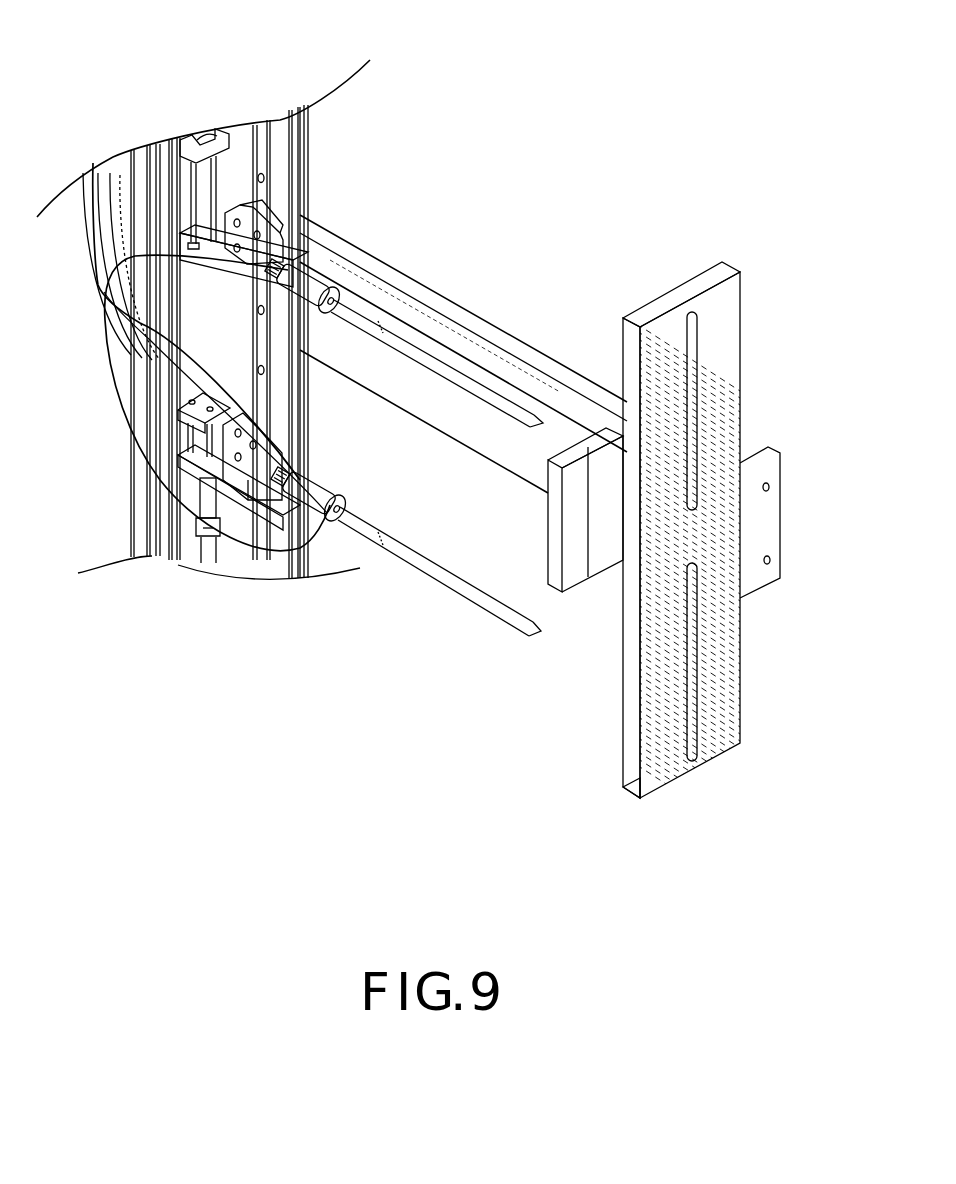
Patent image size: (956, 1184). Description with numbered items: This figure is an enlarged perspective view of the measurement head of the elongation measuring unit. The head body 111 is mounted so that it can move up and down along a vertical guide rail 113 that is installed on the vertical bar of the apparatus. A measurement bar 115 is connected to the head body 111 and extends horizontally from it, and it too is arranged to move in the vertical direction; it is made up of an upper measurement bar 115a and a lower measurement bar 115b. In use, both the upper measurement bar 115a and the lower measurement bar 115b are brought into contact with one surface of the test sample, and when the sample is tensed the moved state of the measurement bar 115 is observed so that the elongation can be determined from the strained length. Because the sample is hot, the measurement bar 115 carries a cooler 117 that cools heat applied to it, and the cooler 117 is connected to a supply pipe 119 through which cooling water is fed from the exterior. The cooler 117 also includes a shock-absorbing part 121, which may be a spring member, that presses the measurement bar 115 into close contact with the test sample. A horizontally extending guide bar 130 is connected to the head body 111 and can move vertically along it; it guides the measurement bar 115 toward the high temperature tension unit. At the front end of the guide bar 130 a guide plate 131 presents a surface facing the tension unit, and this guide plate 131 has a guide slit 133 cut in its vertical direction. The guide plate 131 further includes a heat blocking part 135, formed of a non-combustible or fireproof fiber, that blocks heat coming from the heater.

The head body 111 is at (243, 147).
The vertical guide rail 113 is at (260, 130).
The measurement bar 115 is at (471, 412).
The upper measurement bar 115a is at (428, 358).
The lower measurement bar 115b is at (410, 557).
The cooler 117 is at (308, 536).
The supply pipe 119 is at (258, 500).
The shock-absorbing part 121 is at (323, 283).
The guide bar 130 is at (382, 272).
The guide plate 131 is at (628, 698).
The guide slit 133 is at (695, 415).
The heat blocking part 135 is at (648, 740).